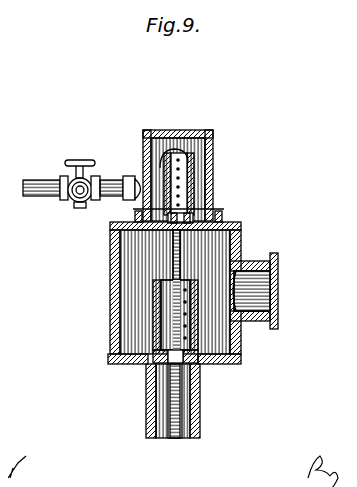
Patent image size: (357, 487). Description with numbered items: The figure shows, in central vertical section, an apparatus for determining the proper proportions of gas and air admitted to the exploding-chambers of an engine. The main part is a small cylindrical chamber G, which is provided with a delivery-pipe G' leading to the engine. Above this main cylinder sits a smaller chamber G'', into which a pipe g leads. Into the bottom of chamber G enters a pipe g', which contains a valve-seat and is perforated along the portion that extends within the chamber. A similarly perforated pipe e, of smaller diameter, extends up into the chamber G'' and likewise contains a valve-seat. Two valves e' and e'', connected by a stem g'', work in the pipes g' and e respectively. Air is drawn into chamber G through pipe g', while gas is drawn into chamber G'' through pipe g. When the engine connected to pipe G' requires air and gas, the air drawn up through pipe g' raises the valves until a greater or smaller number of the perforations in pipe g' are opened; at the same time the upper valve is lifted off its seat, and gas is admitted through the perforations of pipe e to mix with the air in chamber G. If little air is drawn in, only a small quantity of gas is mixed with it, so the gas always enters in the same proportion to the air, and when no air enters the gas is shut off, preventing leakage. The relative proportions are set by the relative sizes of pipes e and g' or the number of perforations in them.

The perforated pipe e is at (178, 178).
The smaller chamber G'' is at (192, 175).
The valve e' is at (203, 213).
The pipe g is at (82, 184).
The stem g'' is at (175, 296).
The cylindrical chamber G is at (174, 293).
The delivery-pipe G' is at (271, 291).
The valve e'' is at (152, 410).
The pipe g' is at (182, 401).